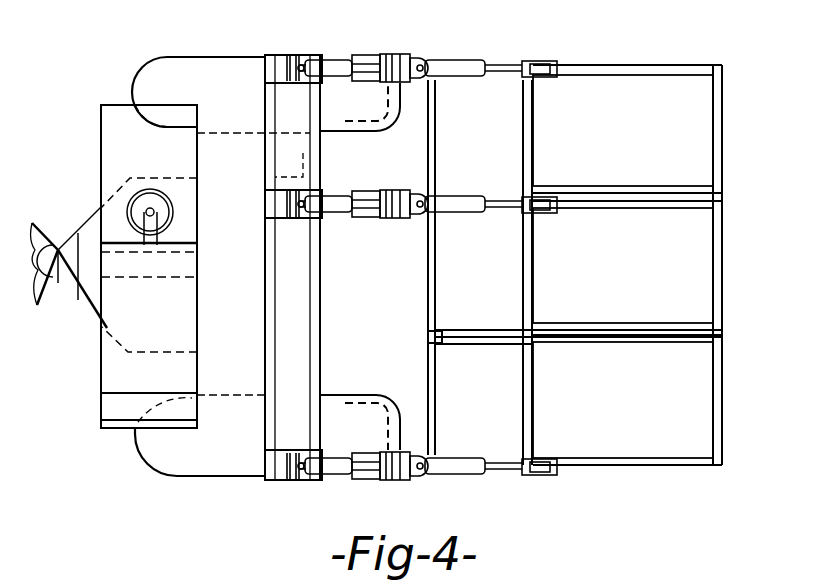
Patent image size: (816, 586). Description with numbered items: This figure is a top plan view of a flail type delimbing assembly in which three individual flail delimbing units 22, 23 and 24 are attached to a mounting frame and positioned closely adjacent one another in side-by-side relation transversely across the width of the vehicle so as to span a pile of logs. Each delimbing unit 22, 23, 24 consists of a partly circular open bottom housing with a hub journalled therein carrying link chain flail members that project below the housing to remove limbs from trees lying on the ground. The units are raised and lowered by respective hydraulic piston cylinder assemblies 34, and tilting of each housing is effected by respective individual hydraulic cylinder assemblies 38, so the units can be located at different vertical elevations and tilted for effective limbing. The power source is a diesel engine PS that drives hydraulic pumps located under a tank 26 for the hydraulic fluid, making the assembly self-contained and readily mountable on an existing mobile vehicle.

The flail delimbing unit 22 is at (632, 406).
The flail delimbing unit 23 is at (632, 272).
The flail delimbing unit 24 is at (632, 139).
The tank 26 is at (101, 138).
The hydraulic piston cylinder assembly 34 is at (335, 58).
The hydraulic cylinder assembly 38 is at (453, 206).
The diesel engine PS is at (143, 323).